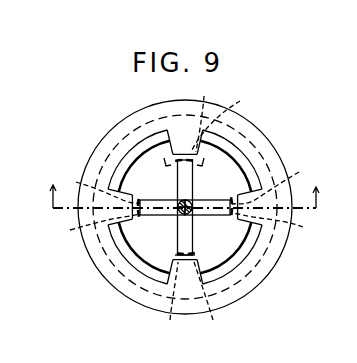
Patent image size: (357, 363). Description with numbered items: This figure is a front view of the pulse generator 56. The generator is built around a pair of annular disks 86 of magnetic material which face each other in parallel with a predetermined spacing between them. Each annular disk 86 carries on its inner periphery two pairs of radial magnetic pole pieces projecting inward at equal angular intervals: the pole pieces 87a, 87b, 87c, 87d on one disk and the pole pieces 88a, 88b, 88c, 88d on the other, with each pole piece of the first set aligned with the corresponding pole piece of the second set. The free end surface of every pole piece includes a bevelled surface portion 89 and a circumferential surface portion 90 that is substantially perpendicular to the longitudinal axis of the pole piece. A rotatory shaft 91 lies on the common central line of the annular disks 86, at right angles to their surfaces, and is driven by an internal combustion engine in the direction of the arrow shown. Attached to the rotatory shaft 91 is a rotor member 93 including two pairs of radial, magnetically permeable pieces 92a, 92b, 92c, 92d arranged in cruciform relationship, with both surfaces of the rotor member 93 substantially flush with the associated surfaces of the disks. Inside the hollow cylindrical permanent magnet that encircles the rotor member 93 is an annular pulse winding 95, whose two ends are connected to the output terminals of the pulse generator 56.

The pulse generator 56 is at (110, 112).
The annular disk 86 is at (150, 113).
The annular pulse winding 95 is at (244, 159).
The bevelled surface portion 89 is at (212, 272).
The circumferential surface portion 90 is at (191, 158).
The rotatory shaft 91 is at (176, 254).
The radial magnetically permeable piece 92a is at (172, 216).
The radial magnetically permeable piece 92b is at (179, 186).
The radial magnetically permeable piece 92c is at (205, 216).
The radial magnetically permeable piece 92d is at (191, 244).
The rotor member 93 is at (191, 202).
The radial magnetic pole piece 87a is at (95, 187).
The radial magnetic pole piece 87b is at (201, 116).
The radial magnetic pole piece 87c is at (279, 224).
The radial magnetic pole piece 87d is at (164, 299).
The radial magnetic pole piece 88a is at (92, 228).
The radial magnetic pole piece 88b is at (228, 120).
The radial magnetic pole piece 88c is at (277, 183).
The radial magnetic pole piece 88d is at (213, 299).